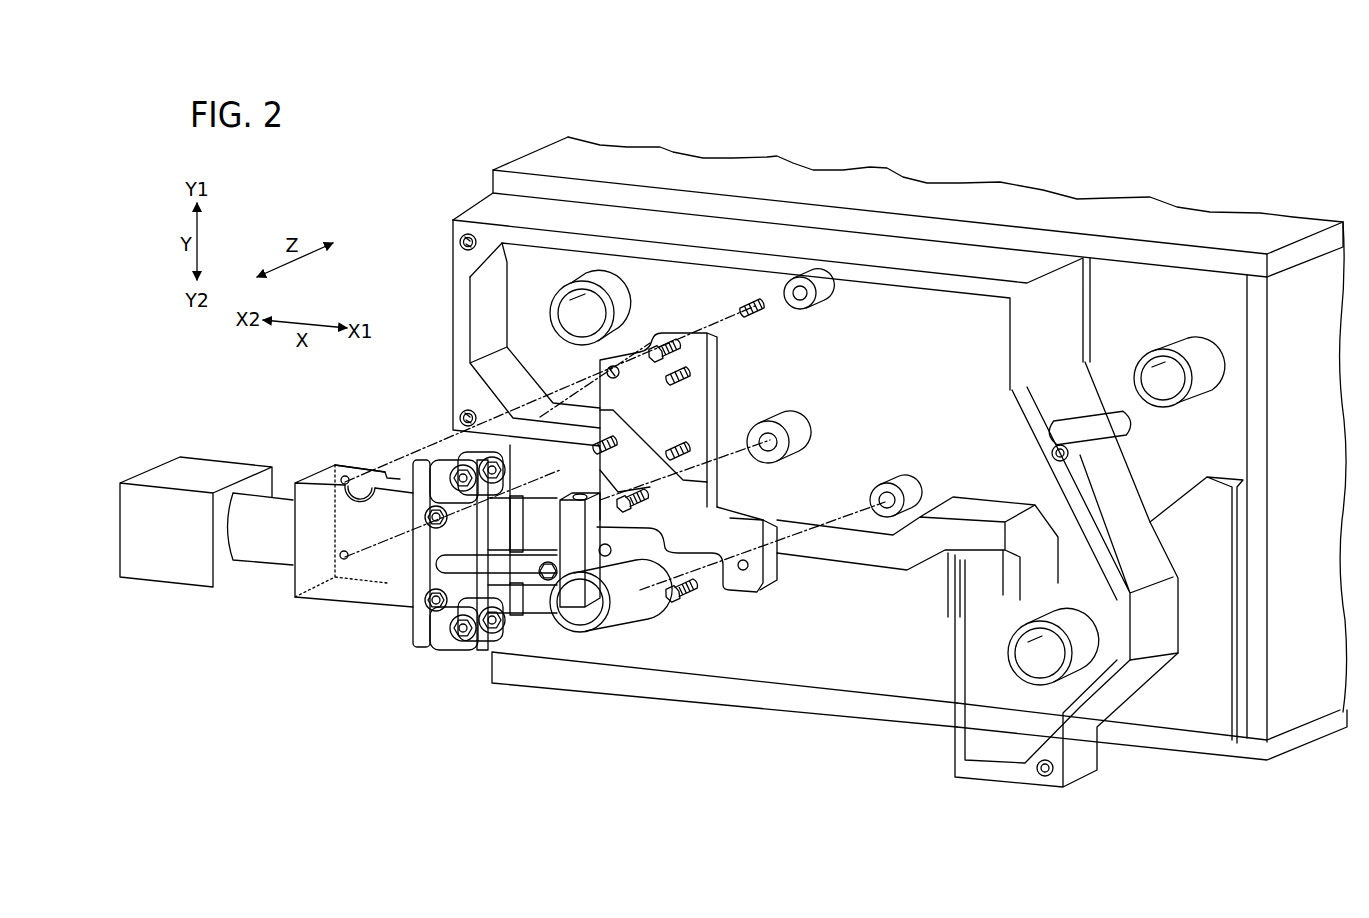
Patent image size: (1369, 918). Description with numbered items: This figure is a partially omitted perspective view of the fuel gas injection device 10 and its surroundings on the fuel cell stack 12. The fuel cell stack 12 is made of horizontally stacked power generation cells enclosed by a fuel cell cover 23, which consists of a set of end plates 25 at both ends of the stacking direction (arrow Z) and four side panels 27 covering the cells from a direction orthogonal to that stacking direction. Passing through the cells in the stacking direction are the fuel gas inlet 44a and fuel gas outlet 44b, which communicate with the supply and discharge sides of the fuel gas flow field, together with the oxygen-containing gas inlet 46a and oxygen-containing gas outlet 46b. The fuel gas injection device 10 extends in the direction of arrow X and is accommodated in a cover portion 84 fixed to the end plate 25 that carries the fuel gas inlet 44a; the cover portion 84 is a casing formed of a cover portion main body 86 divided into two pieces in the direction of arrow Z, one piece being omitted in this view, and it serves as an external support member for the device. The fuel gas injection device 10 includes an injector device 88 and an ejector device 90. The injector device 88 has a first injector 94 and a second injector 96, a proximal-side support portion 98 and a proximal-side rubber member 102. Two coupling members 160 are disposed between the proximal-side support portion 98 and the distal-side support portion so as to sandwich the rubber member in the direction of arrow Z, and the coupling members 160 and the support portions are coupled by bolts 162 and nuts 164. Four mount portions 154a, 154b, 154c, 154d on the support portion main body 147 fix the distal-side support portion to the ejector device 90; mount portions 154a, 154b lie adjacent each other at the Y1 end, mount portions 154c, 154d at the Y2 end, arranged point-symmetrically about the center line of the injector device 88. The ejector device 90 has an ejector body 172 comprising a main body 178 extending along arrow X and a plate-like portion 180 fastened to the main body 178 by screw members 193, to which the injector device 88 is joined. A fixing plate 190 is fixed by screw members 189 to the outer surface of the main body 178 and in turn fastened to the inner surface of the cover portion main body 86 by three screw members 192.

The fuel gas injection device 10 is at (207, 442).
The fuel cell stack 12 is at (540, 137).
The fuel cell cover 23 is at (498, 160).
The end plate 25 is at (745, 667).
The side panel 27 is at (1223, 227).
The fuel gas inlet 44a is at (550, 308).
The fuel gas outlet 44b is at (1073, 633).
The oxygen-containing gas inlet 46a is at (1185, 343).
The oxygen-containing gas outlet 46b is at (587, 640).
The cover portion 84 is at (450, 218).
The cover portion main body 86 is at (452, 235).
The injector device 88 is at (527, 486).
The ejector device 90 is at (334, 462).
The first injector 94 is at (503, 513).
The second injector 96 is at (517, 652).
The proximal-side support portion 98 is at (603, 570).
The proximal-side rubber member 102 is at (540, 510).
The support portion main body 147 is at (465, 650).
The mount portion 154a is at (440, 470).
The mount portion 154b is at (470, 452).
The mount portion 154c is at (448, 652).
The mount portion 154d is at (487, 645).
The coupling member 160 is at (538, 625).
The bolt 162 is at (600, 528).
The nut 164 is at (602, 632).
The ejector body 172 is at (354, 578).
The main body 178 is at (338, 590).
The plate-like portion 180 is at (372, 571).
The screw member 189 is at (733, 303).
The fixing plate 190 is at (748, 578).
The screw member 192 is at (657, 362).
The screw member 193 is at (418, 597).